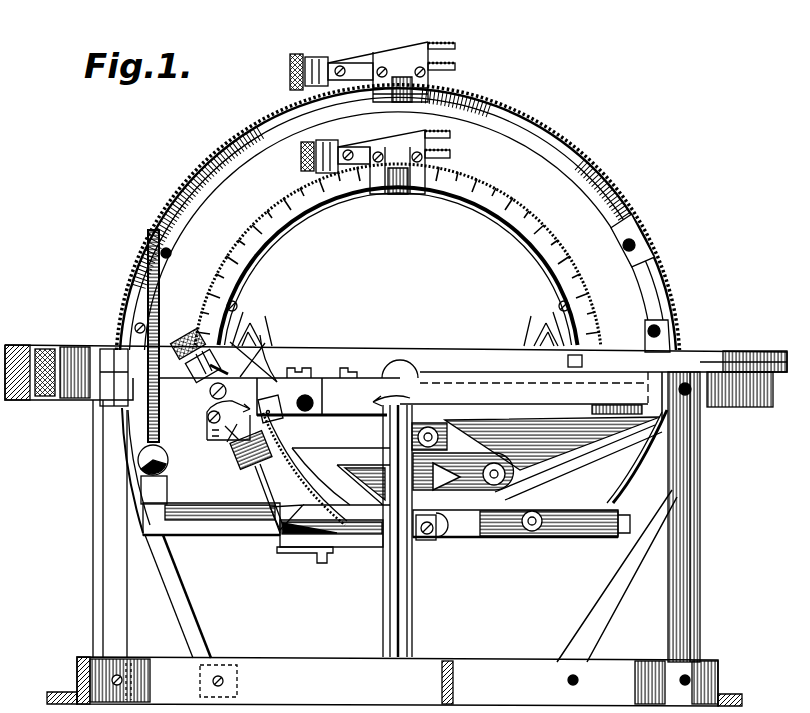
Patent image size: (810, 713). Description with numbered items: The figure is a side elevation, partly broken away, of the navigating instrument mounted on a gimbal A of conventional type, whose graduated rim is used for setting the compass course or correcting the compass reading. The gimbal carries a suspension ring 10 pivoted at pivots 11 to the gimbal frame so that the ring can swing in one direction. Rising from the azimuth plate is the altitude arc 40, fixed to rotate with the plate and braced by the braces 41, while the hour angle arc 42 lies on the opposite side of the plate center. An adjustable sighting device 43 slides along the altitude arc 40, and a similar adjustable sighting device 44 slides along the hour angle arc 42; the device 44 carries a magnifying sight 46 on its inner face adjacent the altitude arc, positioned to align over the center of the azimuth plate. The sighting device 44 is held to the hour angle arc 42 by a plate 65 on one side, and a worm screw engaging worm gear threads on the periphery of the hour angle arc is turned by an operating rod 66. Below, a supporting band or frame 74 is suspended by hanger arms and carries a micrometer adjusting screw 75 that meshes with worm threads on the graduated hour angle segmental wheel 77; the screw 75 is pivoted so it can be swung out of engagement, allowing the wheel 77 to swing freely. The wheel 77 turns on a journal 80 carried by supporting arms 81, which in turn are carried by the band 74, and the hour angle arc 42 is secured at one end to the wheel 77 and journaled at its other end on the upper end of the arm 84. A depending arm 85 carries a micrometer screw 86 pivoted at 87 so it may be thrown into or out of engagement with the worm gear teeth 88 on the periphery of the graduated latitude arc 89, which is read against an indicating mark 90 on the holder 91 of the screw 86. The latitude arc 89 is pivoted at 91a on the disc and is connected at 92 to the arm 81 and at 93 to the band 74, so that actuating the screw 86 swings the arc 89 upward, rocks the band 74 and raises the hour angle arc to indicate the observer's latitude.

The suspension ring 10 is at (45, 345).
The pivots 11 is at (60, 347).
The altitude arc 40 is at (397, 254).
The braces 41 is at (244, 312).
The hour angle arc 42 is at (398, 218).
The adjustable sighting device 43 is at (360, 146).
The adjustable sighting device 44 is at (378, 55).
The magnifying sight 46 is at (400, 66).
The plate 65 is at (378, 93).
The operating rod 66 is at (297, 60).
The supporting band or frame 74 is at (578, 518).
The micrometer adjusting screw 75 is at (140, 460).
The graduated hour angle segmental wheel 77 is at (162, 300).
The journal 80 is at (112, 378).
The supporting arms 81 is at (505, 510).
The arm 84 is at (630, 492).
The depending arm 85 is at (274, 388).
The micrometer screw 86 is at (243, 467).
The pivot 87 is at (268, 352).
The worm gear teeth 88 is at (271, 489).
The graduated latitude arc or segment 89 is at (317, 465).
The indicating mark 90 is at (207, 422).
The holder 91 is at (240, 441).
The pivot 91a is at (445, 436).
The connection 92 is at (512, 476).
The connection 93 is at (440, 530).
The gimbal A is at (394, 681).